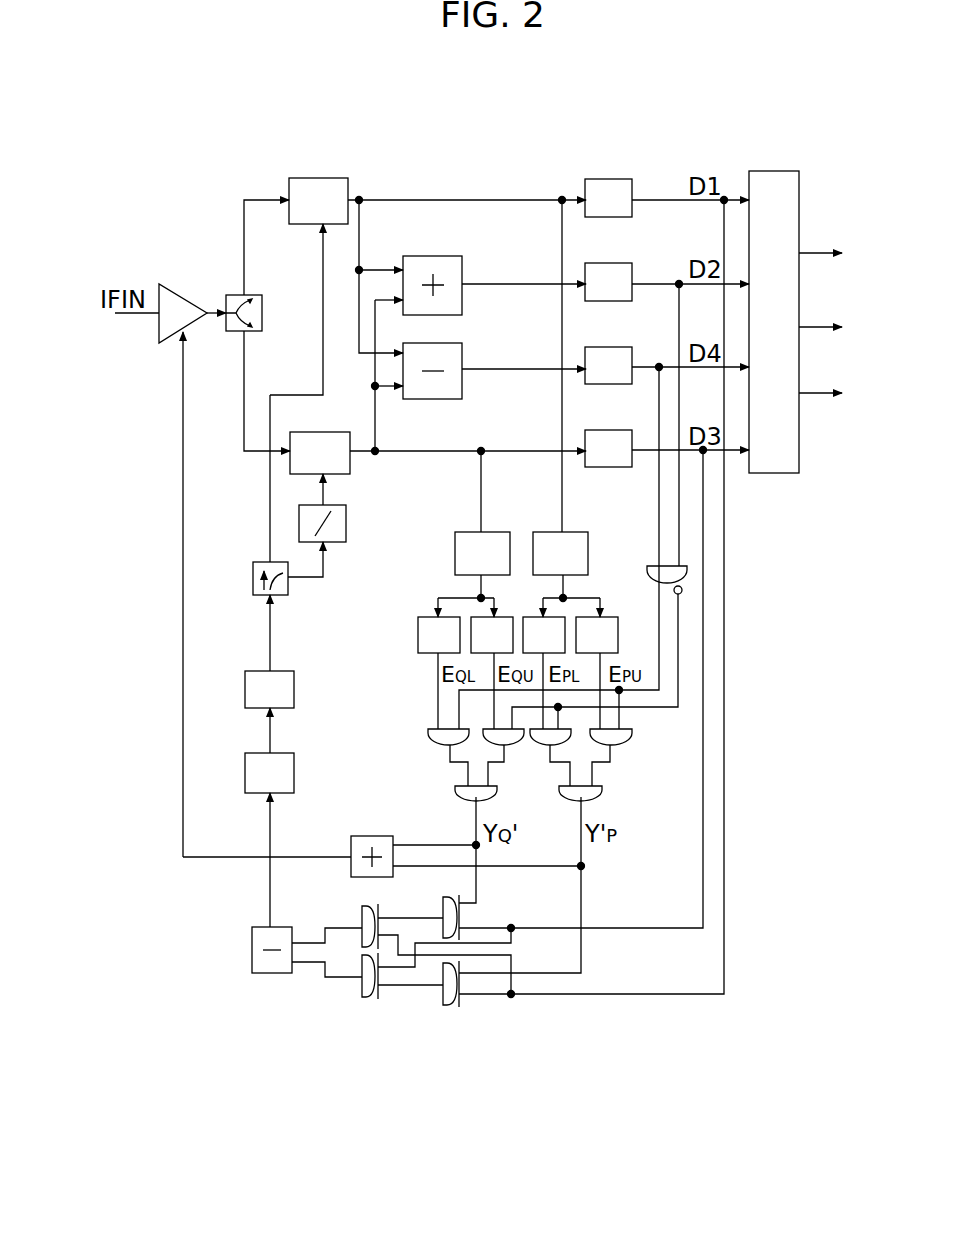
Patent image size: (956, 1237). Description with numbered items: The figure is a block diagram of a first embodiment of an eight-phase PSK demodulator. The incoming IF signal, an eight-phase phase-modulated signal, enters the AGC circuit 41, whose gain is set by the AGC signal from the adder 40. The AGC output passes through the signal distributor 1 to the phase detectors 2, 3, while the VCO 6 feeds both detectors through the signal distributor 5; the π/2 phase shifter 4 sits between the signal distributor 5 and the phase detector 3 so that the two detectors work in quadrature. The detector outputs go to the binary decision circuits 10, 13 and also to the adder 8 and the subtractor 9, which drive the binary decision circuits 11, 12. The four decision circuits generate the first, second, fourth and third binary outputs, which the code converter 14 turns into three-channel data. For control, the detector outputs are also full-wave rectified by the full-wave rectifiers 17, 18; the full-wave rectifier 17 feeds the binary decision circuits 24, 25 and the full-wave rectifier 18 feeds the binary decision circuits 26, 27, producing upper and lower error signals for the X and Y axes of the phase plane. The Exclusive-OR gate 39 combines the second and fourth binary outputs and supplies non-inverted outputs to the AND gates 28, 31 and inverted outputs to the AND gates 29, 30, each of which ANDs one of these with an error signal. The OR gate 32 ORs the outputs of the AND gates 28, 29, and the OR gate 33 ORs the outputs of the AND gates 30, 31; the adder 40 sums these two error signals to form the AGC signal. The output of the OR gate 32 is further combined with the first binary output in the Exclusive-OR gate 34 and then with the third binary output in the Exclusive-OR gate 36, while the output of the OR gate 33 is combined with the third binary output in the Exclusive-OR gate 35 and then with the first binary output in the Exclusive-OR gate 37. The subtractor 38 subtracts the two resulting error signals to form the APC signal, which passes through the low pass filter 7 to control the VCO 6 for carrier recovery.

The signal distributor 1 is at (259, 297).
The phase detector 2 is at (325, 178).
The phase detector 3 is at (330, 432).
The π/2 phase shifter 4 is at (346, 524).
The signal distributor 5 is at (288, 590).
The VCO 6 is at (294, 688).
The low pass filter 7 is at (294, 768).
The adder 8 is at (428, 256).
The subtractor 9 is at (437, 399).
The binary decision circuit 10 is at (620, 179).
The binary decision circuit 11 is at (625, 263).
The binary decision circuit 12 is at (618, 347).
The binary decision circuit 13 is at (612, 430).
The code converter 14 is at (800, 185).
The full-wave rectifier 17 is at (575, 532).
The full-wave rectifier 18 is at (497, 532).
The binary decision circuit 24 is at (613, 617).
The binary decision circuit 25 is at (560, 617).
The binary decision circuit 26 is at (507, 617).
The binary decision circuit 27 is at (420, 617).
The AND gate 28 is at (628, 740).
The AND gate 29 is at (545, 745).
The AND gate 30 is at (513, 745).
The AND gate 31 is at (435, 745).
The OR gate 32 is at (602, 790).
The OR gate 33 is at (460, 798).
The Exclusive-OR gate 34 is at (450, 1005).
The Exclusive-OR gate 35 is at (442, 905).
The Exclusive-OR gate 36 is at (370, 997).
The Exclusive-OR gate 37 is at (365, 907).
The subtractor 38 is at (262, 927).
The Exclusive-OR gate 39 is at (648, 570).
The adder 40 is at (370, 836).
The AGC circuit 41 is at (188, 300).